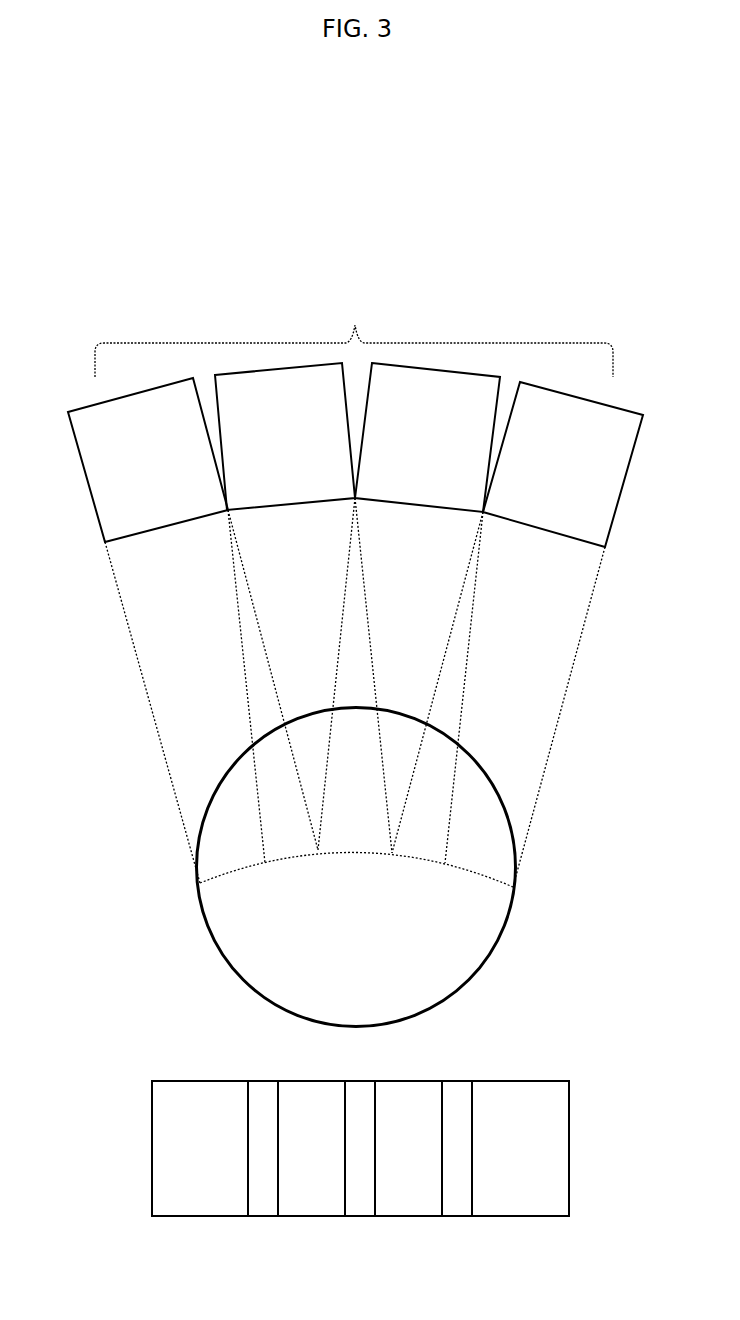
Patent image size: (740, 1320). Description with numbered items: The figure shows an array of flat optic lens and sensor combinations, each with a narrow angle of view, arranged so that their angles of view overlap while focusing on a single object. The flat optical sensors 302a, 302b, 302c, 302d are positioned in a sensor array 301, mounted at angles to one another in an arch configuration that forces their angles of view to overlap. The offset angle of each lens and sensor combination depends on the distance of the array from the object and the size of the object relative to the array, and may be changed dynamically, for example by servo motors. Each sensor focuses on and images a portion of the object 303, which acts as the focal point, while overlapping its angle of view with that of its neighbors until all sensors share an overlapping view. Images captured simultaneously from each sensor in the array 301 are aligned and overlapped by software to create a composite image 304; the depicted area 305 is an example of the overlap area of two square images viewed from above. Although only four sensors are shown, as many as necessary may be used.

The sensor array 301 is at (355, 325).
The flat optical sensor 302a is at (148, 460).
The flat optical sensor 302b is at (285, 436).
The flat optical sensor 302c is at (427, 437).
The flat optical sensor 302d is at (563, 464).
The object 303 is at (228, 918).
The composite image 304 is at (127, 1082).
The overlap area 305 is at (453, 1093).